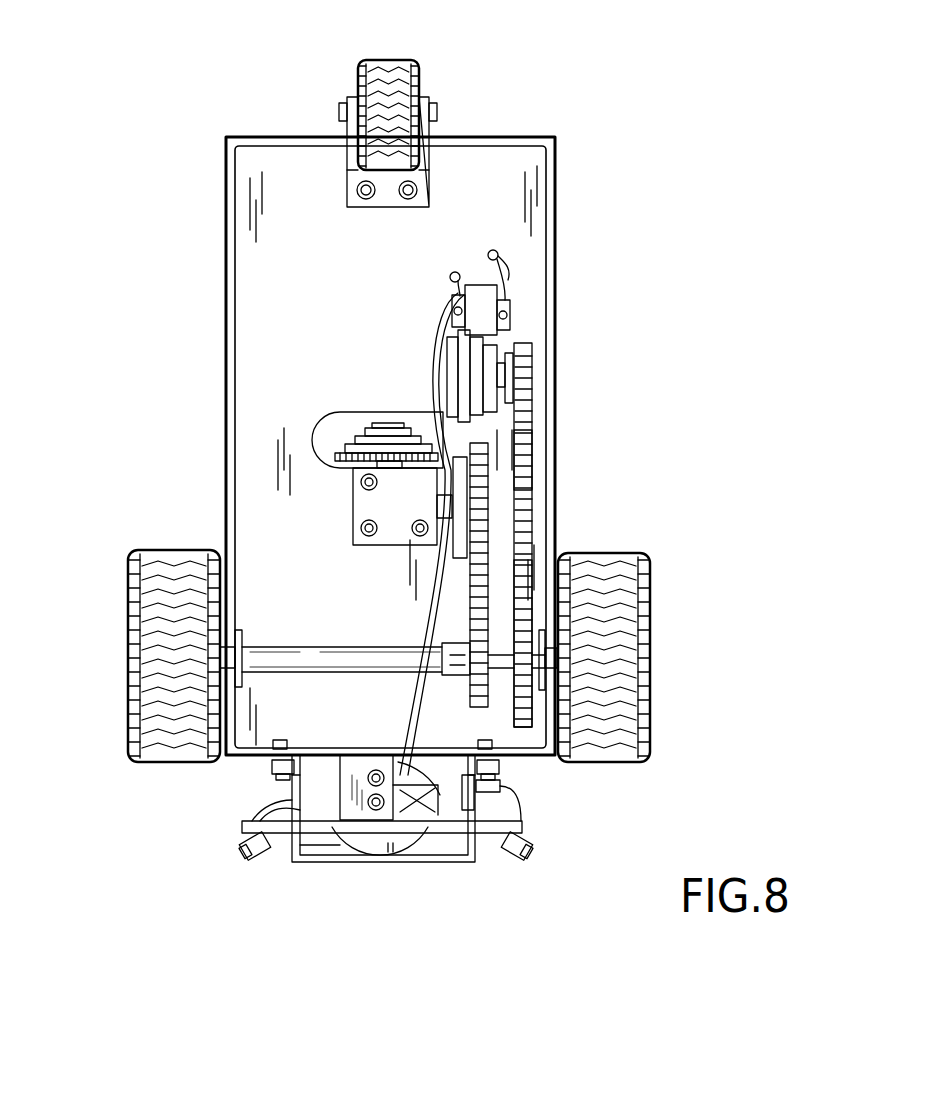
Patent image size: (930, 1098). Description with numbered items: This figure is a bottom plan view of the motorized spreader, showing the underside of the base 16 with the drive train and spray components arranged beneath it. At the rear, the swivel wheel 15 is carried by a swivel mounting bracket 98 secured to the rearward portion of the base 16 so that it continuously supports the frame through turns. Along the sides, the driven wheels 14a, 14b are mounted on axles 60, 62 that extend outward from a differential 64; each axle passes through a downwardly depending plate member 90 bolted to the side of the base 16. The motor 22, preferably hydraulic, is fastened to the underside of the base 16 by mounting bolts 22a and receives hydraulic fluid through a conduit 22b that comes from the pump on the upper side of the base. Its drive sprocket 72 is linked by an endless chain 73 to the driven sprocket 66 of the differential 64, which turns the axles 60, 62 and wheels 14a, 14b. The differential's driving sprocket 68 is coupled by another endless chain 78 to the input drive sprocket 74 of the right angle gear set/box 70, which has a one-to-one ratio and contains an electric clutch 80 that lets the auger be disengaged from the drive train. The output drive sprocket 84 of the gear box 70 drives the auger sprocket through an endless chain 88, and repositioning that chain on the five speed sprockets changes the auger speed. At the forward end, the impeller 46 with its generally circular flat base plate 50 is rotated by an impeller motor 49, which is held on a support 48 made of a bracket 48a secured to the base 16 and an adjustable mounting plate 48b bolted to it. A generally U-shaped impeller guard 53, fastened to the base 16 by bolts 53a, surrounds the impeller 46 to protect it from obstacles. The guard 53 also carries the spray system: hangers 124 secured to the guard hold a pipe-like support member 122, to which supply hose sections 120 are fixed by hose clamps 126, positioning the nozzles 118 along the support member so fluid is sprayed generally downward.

The driven wheel 14a is at (643, 554).
The driven wheel 14b is at (170, 557).
The swivel wheel 15 is at (402, 60).
The base 16 is at (552, 137).
The motor 22 is at (522, 334).
The mounting bolts 22a is at (507, 314).
The conduit 22b is at (508, 265).
The impeller 46 is at (392, 862).
The support 48 is at (355, 766).
The bracket 48a is at (358, 768).
The adjustable mounting plate 48b is at (475, 850).
The impeller motor 49 is at (462, 797).
The base plate 50 is at (410, 840).
The impeller guard 53 is at (340, 862).
The bolts 53a is at (385, 742).
The axle 60 is at (556, 662).
The axle 62 is at (277, 652).
The differential 64 is at (493, 632).
The driven sprocket 66 is at (534, 593).
The driving sprocket 68 is at (382, 678).
The gear set/box 70 is at (356, 509).
The drive sprocket 72 is at (534, 372).
The endless chain 73 is at (528, 437).
The input drive sprocket 74 is at (488, 448).
The endless chain 78 is at (500, 455).
The electric clutch 80 is at (456, 560).
The output drive sprocket 84 is at (330, 450).
The endless chain 88 is at (390, 453).
The plate member 90 is at (240, 635).
The swivel mounting bracket 98 is at (420, 186).
The nozzles 118 is at (248, 845).
The supply hose sections 120 is at (505, 772).
The support member 122 is at (242, 826).
The hangers 124 is at (296, 848).
The hose clamps 126 is at (317, 862).